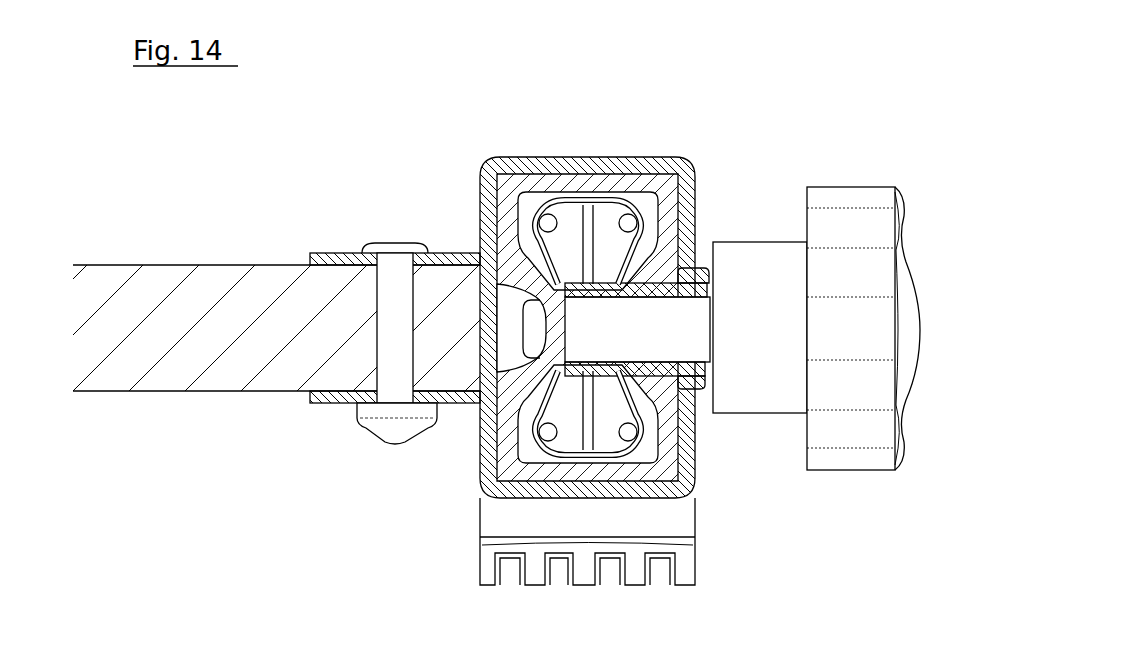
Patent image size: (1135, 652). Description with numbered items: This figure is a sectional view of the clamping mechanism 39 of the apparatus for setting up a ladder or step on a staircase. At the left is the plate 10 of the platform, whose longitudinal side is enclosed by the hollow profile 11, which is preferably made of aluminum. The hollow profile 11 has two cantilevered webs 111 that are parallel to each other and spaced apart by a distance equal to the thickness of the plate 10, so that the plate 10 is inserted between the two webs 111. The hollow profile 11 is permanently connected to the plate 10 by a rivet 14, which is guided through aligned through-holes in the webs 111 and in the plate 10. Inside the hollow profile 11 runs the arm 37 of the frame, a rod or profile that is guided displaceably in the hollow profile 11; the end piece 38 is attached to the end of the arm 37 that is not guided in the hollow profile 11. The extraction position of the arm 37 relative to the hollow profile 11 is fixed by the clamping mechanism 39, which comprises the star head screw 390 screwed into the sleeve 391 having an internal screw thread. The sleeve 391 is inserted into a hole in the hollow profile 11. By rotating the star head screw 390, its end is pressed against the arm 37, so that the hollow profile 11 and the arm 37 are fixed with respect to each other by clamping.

The plate 10 is at (212, 380).
The cantilevered webs 111 is at (458, 255).
The rivet 14 is at (396, 268).
The hollow profile 11 is at (580, 168).
The arm 37 is at (512, 428).
The end piece 38 is at (510, 482).
The clamping mechanism 39 is at (816, 245).
The star head screw 390 is at (863, 286).
The sleeve 391 is at (693, 280).